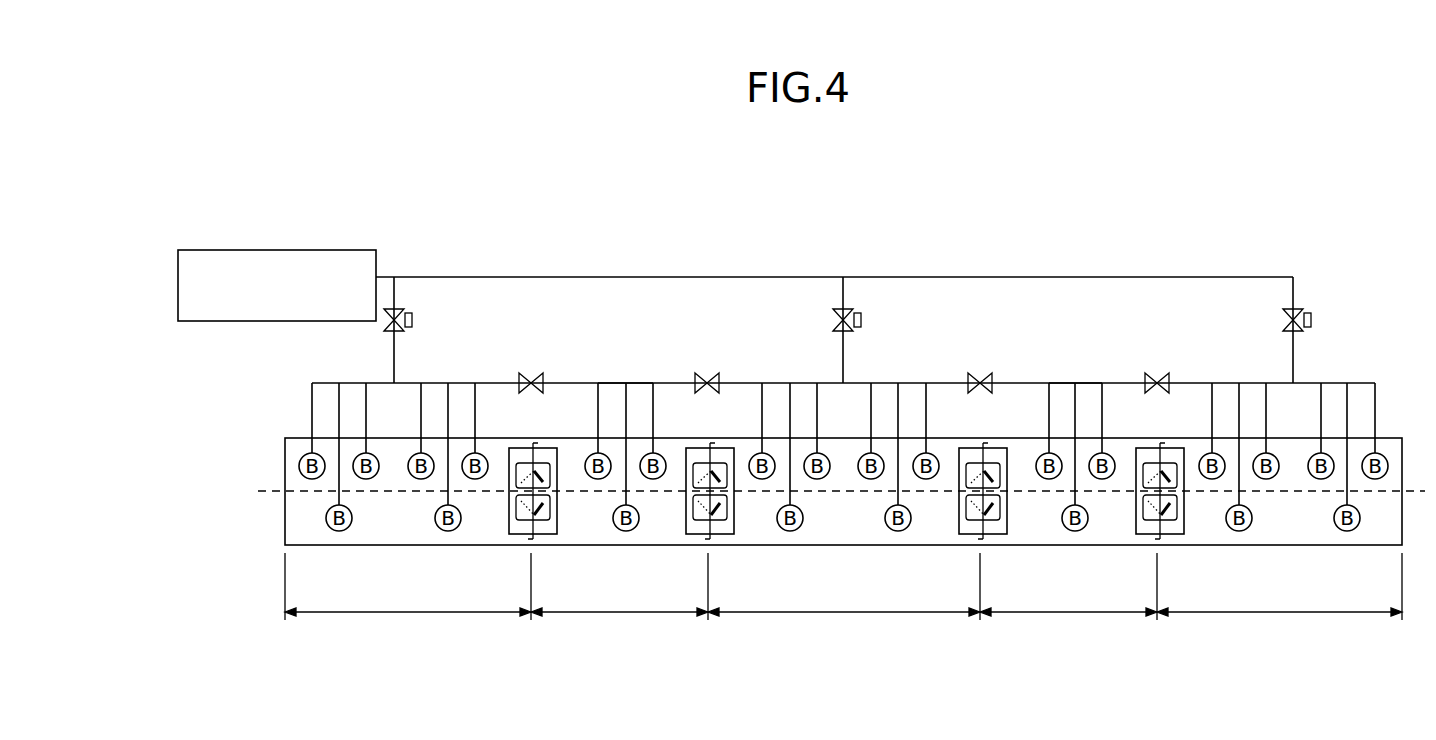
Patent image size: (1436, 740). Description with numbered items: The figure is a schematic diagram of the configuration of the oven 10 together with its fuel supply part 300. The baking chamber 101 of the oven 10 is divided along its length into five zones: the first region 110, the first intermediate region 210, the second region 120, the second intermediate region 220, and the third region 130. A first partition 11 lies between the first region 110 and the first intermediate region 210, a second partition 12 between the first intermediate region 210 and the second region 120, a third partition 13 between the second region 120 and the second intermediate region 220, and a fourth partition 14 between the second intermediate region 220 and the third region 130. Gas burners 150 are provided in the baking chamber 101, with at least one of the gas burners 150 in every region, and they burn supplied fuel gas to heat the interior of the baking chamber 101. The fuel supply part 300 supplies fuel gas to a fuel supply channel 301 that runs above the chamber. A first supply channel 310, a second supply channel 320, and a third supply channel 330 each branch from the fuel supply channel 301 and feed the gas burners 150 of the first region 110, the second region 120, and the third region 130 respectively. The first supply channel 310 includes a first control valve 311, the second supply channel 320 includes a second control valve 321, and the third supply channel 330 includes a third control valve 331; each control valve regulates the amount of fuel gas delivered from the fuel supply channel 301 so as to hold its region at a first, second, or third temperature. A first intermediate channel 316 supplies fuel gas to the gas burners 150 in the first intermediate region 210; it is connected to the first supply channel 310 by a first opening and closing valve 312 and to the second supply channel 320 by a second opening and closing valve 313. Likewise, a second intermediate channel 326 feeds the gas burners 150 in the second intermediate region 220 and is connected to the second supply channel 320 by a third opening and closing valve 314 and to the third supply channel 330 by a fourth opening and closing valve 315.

The oven 10 is at (243, 196).
The fuel supply part 300 is at (298, 250).
The fuel supply channel 301 is at (610, 272).
The first supply channel 310 is at (396, 350).
The first control valve 311 is at (412, 320).
The first opening and closing valve 312 is at (534, 376).
The second opening and closing valve 313 is at (710, 376).
The third opening and closing valve 314 is at (983, 376).
The fourth opening and closing valve 315 is at (1160, 376).
The first intermediate channel 316 is at (637, 381).
The second supply channel 320 is at (845, 350).
The second control valve 321 is at (861, 320).
The second intermediate channel 326 is at (1087, 381).
The third supply channel 330 is at (1295, 350).
The third control valve 331 is at (1311, 320).
The first partition 11 is at (542, 448).
The second partition 12 is at (719, 448).
The third partition 13 is at (992, 448).
The fourth partition 14 is at (1169, 448).
The baking chamber 101 is at (297, 438).
The gas burners 150 is at (299, 466).
The first region 110 is at (407, 614).
The first intermediate region 210 is at (617, 614).
The second region 120 is at (837, 614).
The second intermediate region 220 is at (1066, 614).
The third region 130 is at (1279, 614).